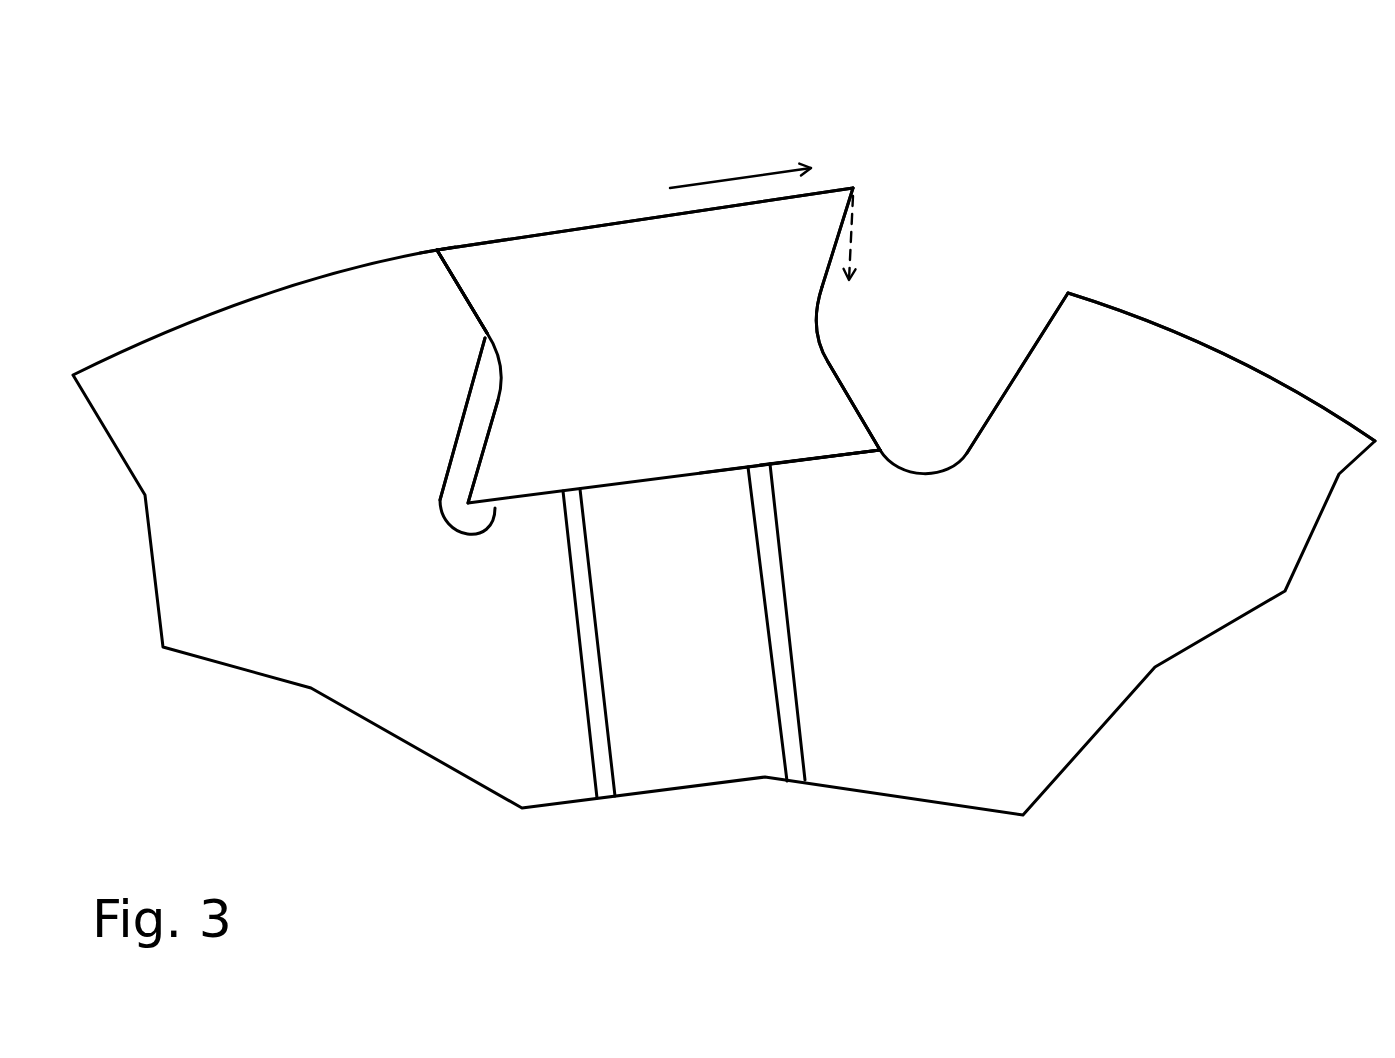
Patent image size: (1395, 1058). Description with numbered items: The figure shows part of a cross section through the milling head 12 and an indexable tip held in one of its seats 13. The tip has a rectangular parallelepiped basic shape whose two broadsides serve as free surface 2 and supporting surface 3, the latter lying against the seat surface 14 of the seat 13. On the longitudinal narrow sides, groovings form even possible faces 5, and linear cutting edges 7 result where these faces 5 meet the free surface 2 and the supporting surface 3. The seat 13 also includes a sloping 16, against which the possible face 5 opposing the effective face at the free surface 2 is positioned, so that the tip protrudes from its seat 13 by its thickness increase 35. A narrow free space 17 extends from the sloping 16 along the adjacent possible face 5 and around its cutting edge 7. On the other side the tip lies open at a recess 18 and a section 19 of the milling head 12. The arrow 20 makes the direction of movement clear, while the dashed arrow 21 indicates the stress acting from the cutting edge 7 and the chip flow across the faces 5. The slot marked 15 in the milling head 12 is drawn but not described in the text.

The free surface 2 is at (626, 219).
The supporting surface 3 is at (810, 465).
The possible face 5 is at (456, 287).
The cutting edge 7 is at (434, 241).
The milling head 12 is at (1007, 658).
The seat 13 is at (600, 147).
The seat surface 14 is at (787, 451).
The slot 15 is at (714, 635).
The sloping 16 is at (476, 303).
The free space 17 is at (451, 500).
The recess 18 is at (1103, 296).
The section 19 is at (970, 342).
The arrow 20 is at (740, 164).
The dashed arrow 21 is at (875, 238).
The thickness increase 35 is at (428, 247).